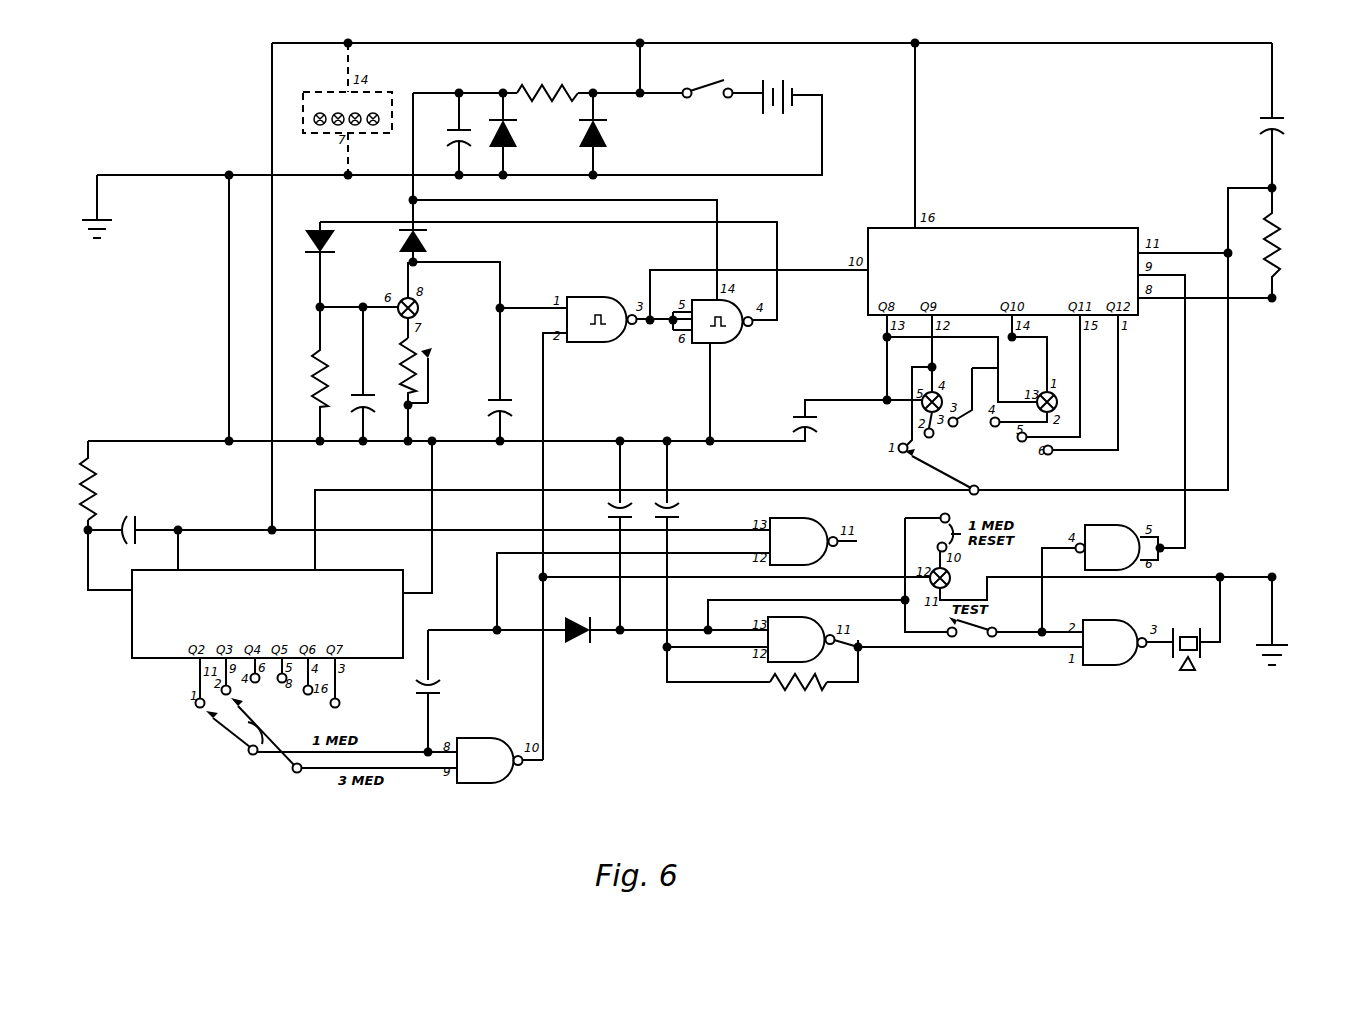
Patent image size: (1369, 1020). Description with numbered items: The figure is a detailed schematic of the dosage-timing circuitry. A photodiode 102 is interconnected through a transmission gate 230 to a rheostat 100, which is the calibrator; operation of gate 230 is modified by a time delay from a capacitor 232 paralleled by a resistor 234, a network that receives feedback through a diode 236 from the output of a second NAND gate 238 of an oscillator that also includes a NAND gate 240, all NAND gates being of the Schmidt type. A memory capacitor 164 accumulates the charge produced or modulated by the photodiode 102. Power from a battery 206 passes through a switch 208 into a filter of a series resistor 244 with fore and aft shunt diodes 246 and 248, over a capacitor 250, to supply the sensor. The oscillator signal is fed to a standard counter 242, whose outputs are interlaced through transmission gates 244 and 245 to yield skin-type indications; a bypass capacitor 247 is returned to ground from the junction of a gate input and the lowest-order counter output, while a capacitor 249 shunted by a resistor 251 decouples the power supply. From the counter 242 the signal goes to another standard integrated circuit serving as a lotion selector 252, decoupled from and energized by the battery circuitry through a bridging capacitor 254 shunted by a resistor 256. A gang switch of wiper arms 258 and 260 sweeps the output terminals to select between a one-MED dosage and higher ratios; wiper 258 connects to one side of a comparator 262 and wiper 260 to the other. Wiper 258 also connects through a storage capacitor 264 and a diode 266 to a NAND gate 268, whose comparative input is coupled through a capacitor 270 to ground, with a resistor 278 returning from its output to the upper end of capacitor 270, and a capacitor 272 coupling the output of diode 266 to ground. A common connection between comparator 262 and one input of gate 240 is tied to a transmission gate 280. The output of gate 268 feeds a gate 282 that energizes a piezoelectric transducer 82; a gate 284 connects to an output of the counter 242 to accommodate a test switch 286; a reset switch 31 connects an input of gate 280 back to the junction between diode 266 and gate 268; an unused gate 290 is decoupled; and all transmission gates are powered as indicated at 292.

The transmission gate power supply 292 is at (330, 86).
The series resistor / transmission gate 244 is at (560, 92).
The switch 208 is at (725, 82).
The battery 206 is at (782, 78).
The capacitor 250 is at (452, 140).
The shunt diode 248 is at (514, 147).
The shunt diode 246 is at (605, 147).
The capacitor 249 is at (1288, 113).
The 4020 counter 242 is at (1040, 228).
The resistor 251 is at (1282, 238).
The diode 236 is at (316, 226).
The photodiode 102 is at (430, 237).
The NAND gate 240 is at (590, 297).
The second NAND gate 238 is at (728, 343).
The transmission gate 230 is at (422, 304).
The rheostat 100 is at (402, 342).
The resistor 234 is at (306, 365).
The capacitor 232 is at (347, 406).
The memory capacitor 164 is at (520, 410).
The transmission gate 245 is at (1060, 393).
The bypass capacitor 247 is at (812, 433).
The reset switch 31 is at (962, 513).
The transmission gate 280 is at (953, 567).
The gate 284 is at (1110, 525).
The unused gate 290 is at (788, 518).
The NAND gate 268 is at (800, 617).
The capacitor 272 is at (618, 500).
The capacitor 270 is at (672, 500).
The diode 266 is at (580, 640).
The resistor 278 is at (805, 686).
The test switch 286 is at (972, 641).
The gate 282 is at (1105, 665).
The piezoelectric transducer 82 is at (1205, 663).
The resistor 256 is at (80, 468).
The bridging capacitor 254 is at (140, 512).
The lotion selector 252 is at (128, 625).
The storage capacitor 264 is at (442, 681).
The wiper arm 260 is at (262, 724).
The wiper arm 258 is at (240, 738).
The comparator 262 is at (500, 783).